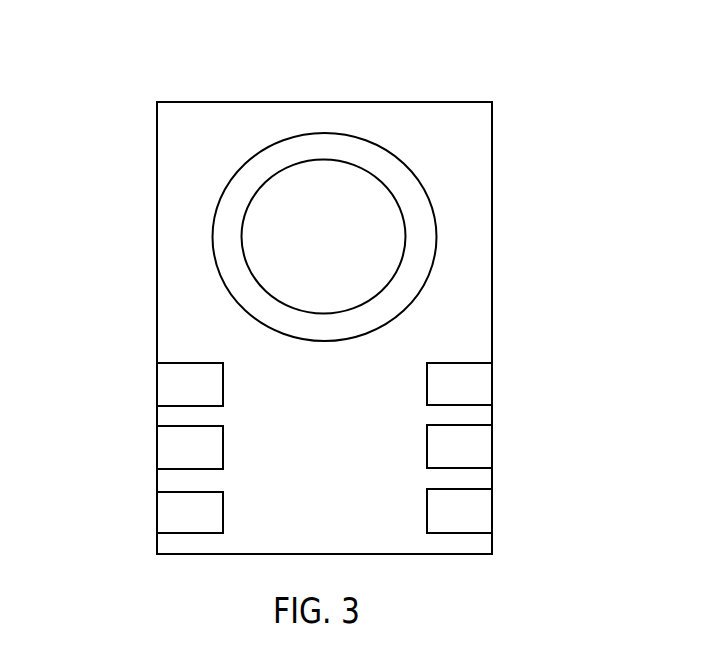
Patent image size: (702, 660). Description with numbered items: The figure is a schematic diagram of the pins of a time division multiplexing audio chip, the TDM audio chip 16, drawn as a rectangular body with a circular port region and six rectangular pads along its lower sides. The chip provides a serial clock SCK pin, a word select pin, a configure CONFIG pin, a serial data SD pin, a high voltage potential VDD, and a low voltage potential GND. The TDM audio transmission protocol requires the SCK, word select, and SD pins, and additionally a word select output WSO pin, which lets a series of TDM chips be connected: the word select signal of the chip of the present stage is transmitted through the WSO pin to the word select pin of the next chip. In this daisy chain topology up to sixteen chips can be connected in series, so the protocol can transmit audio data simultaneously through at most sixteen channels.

The TDM audio chip 16 is at (138, 86).
The low voltage potential GND is at (299, 237).
The serial clock (SCK) pin SCK is at (160, 447).
The serial data (SD) pin SD is at (165, 512).
The high voltage potential VDD is at (492, 384).
The configure (CONFIG) pin CONFIG is at (512, 446).
The word select output (WSO) pin WSO is at (492, 511).